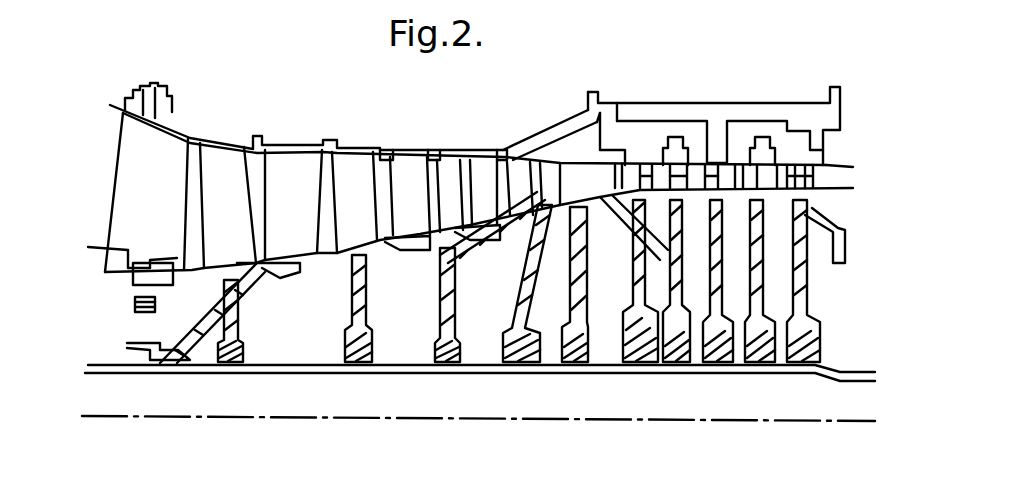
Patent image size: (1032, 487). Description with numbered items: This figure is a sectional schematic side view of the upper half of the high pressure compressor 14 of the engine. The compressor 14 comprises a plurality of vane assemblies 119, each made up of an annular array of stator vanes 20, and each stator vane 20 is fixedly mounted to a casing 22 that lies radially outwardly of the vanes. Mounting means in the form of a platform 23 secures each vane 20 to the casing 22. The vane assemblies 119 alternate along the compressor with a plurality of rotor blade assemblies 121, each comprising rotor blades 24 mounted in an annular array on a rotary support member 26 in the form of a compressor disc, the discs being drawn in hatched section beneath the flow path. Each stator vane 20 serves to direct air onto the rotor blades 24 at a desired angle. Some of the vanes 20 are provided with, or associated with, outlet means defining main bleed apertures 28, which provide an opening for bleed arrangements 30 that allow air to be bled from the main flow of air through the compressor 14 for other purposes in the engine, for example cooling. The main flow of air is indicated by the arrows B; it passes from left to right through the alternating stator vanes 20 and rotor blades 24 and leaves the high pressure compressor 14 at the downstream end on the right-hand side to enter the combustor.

The high pressure compressor 14 is at (288, 345).
The stator vane 20 is at (130, 160).
The casing 22 is at (222, 130).
The platform 23 is at (290, 147).
The rotor blade 24 is at (212, 243).
The rotary support member 26 is at (620, 350).
The main bleed aperture 28 is at (520, 178).
The bleed arrangement 30 is at (597, 110).
The vane assembly 119 is at (407, 200).
The rotor blade assembly 121 is at (215, 202).
The main flow of air B is at (288, 211).